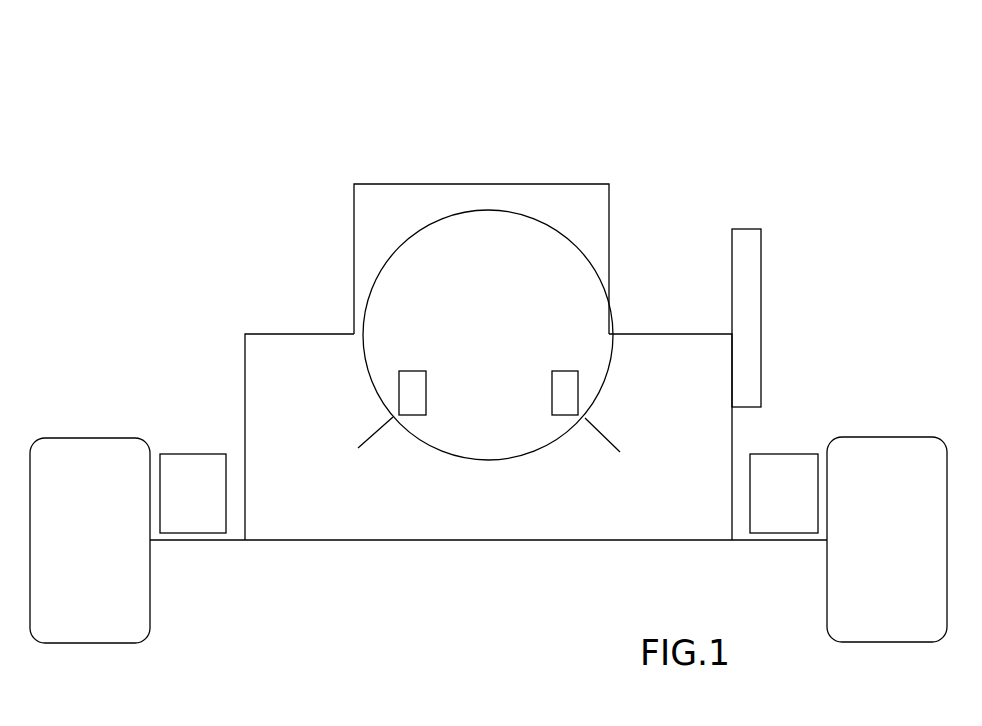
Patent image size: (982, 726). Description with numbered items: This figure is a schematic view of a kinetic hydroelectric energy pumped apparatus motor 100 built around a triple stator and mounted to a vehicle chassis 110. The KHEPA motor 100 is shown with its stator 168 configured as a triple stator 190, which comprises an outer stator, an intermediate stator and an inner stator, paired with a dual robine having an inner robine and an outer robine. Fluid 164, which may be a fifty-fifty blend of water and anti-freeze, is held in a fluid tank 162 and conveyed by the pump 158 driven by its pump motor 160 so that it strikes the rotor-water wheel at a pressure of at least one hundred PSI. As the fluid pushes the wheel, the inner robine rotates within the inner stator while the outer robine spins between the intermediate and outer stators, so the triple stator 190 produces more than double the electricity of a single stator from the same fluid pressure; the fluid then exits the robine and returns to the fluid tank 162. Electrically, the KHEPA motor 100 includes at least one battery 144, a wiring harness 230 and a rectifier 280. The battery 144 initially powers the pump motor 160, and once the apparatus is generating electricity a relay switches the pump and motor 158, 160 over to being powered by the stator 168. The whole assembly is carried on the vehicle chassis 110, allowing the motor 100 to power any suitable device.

The kinetic hydroelectric energy pumped apparatus (KHEPA) motor 100 is at (488, 334).
The vehicle chassis 110 is at (369, 541).
The battery 144 is at (189, 466).
The pump 158 is at (526, 234).
The pump motor 160 is at (586, 193).
The fluid tank 162 is at (442, 533).
The fluid 164 is at (512, 507).
The stator 168 is at (416, 335).
The triple stator 190 is at (368, 258).
The wiring harness 230 is at (405, 400).
The rectifier 280 is at (748, 266).